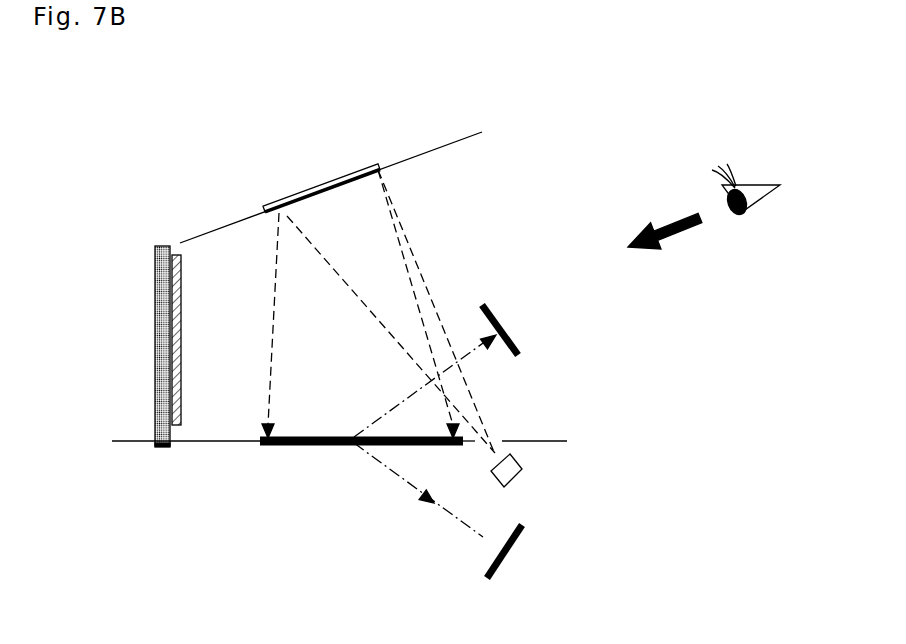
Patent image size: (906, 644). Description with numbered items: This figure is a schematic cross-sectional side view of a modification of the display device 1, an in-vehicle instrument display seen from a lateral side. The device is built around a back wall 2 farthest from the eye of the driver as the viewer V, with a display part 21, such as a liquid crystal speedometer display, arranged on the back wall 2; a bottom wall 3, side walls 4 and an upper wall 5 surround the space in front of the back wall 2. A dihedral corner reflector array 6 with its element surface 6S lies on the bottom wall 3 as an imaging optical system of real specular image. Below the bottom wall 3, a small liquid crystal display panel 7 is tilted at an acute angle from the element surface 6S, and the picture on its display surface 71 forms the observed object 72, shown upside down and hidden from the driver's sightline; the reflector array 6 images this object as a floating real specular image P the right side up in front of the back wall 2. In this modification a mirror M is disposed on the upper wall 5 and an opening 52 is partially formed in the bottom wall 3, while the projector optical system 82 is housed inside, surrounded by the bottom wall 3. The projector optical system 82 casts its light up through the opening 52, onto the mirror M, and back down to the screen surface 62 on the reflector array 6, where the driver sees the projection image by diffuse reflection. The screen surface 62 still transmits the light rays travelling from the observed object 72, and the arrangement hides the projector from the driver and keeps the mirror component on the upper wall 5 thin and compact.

The display device 1 is at (243, 117).
The back wall 2 is at (160, 246).
The display part 21 is at (178, 255).
The bottom wall 3 is at (544, 441).
The side wall 4 is at (463, 198).
The upper wall 5 is at (472, 137).
The mirror M is at (382, 158).
The floating image P is at (488, 298).
The dihedral corner reflector array 6 is at (304, 447).
The element surface 6S is at (215, 447).
The screen surface 62 is at (323, 433).
The opening 52 is at (503, 432).
The projector optical system 82 is at (518, 476).
The liquid crystal display panel 7 is at (504, 576).
The display surface 71 is at (488, 571).
The observed object 72 is at (502, 548).
The viewer V is at (742, 215).